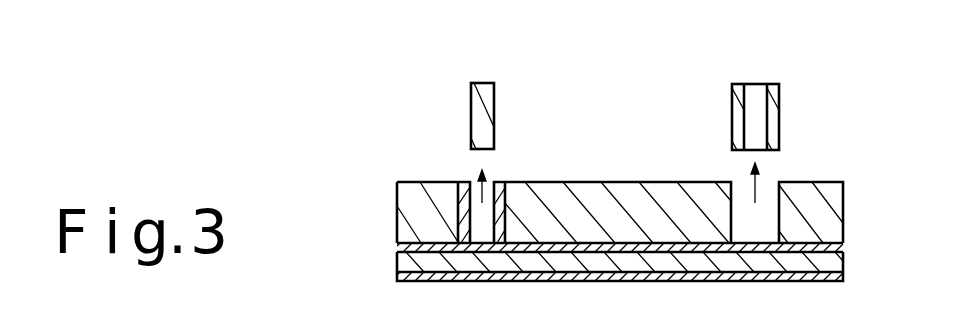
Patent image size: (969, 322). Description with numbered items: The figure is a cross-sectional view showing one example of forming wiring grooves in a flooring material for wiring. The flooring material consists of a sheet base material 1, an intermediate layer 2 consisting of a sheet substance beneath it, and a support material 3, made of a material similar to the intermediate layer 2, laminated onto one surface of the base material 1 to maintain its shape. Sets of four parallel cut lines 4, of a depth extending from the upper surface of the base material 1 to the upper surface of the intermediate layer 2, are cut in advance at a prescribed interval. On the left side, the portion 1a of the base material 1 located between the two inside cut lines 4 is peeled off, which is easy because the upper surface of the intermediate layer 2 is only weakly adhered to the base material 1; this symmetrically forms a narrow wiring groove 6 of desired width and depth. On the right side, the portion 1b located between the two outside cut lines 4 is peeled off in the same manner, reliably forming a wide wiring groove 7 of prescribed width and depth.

The sheet base material 1 is at (830, 217).
The peeled off portion of base material 1a is at (489, 110).
The peeled off portion of base material 1b is at (755, 92).
The intermediate layer 2 is at (832, 249).
The support material 3 is at (815, 282).
The cut lines 4 is at (503, 190).
The wiring groove 6 is at (480, 215).
The wiring groove 7 is at (743, 213).